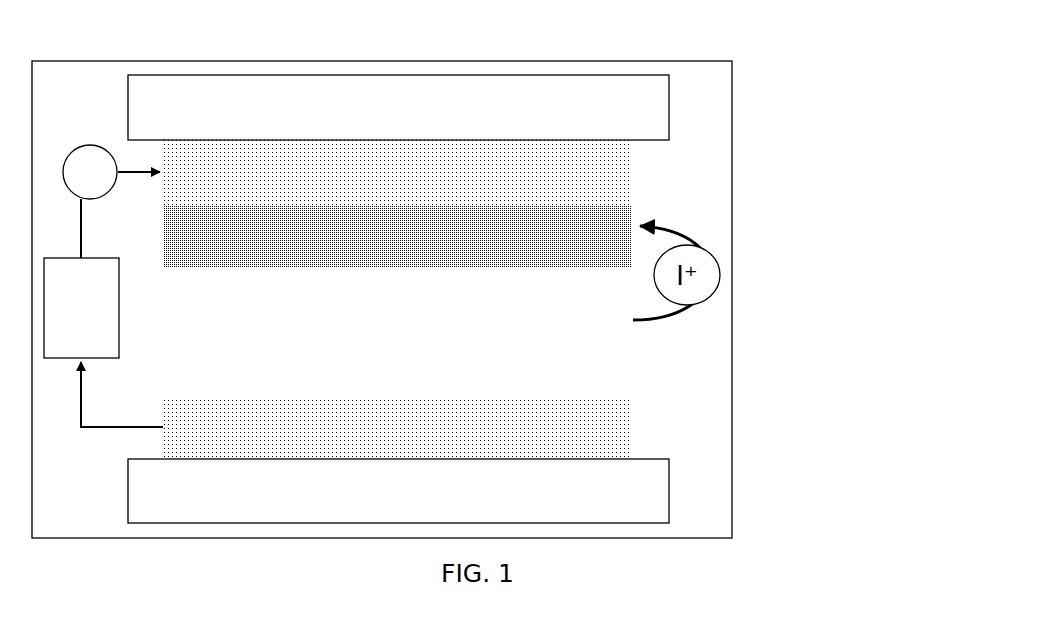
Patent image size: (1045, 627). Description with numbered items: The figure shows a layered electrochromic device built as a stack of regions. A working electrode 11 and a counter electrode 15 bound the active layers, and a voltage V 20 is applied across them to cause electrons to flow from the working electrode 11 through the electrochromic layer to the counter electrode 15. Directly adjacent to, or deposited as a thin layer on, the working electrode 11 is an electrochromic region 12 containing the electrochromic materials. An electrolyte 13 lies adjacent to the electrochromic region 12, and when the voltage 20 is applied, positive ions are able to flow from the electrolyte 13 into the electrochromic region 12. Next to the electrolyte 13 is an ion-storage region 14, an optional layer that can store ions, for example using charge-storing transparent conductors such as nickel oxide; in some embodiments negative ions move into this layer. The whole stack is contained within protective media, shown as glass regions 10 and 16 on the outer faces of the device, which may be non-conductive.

The glass region 10 is at (615, 106).
The working electrode 11 is at (608, 166).
The electrochromic region 12 is at (610, 238).
The electrolyte 13 is at (592, 299).
The ion-storage region 14 is at (592, 370).
The counter electrode 15 is at (609, 447).
The glass region 16 is at (609, 495).
The voltage 20 is at (69, 338).